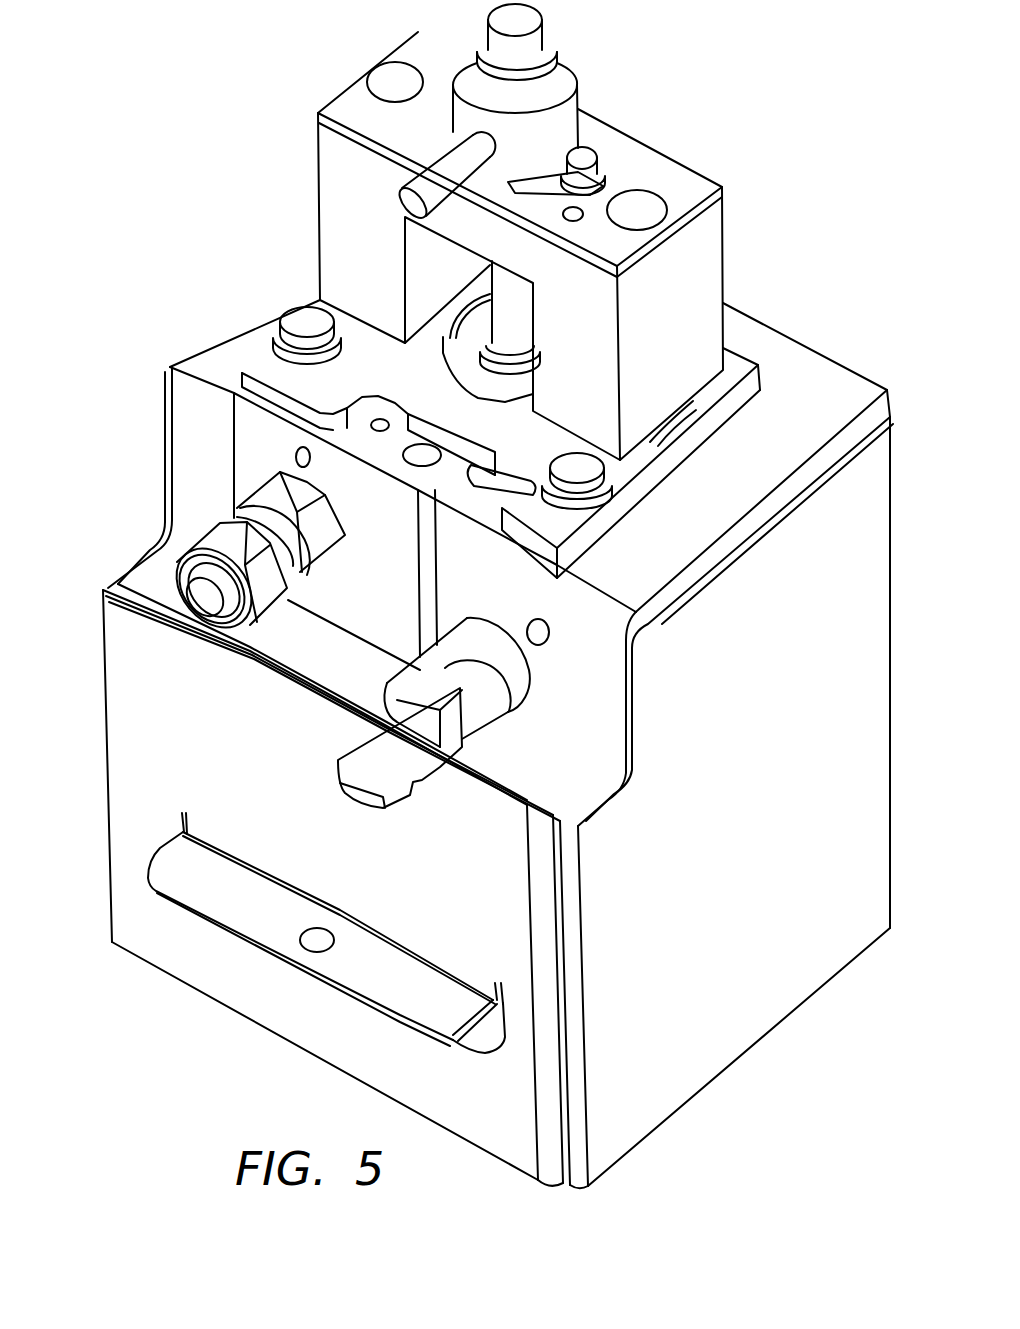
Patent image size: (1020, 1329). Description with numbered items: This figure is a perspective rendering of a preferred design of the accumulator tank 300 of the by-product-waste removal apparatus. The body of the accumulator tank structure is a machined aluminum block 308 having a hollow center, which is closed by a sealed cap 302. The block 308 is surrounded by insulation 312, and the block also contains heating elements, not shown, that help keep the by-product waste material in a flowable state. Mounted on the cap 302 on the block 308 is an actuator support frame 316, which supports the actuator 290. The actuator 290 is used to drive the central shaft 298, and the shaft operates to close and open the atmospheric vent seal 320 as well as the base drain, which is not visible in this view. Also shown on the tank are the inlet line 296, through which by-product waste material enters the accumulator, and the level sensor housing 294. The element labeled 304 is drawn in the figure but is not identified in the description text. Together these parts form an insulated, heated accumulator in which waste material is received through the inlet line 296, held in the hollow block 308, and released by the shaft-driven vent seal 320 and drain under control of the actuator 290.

The actuator 290 is at (467, 49).
The level sensor housing 294 is at (510, 710).
The inlet line 296 is at (240, 508).
The central shaft 298 is at (490, 298).
The accumulator tank 300 is at (768, 110).
The sealed cap 302 is at (545, 508).
The slot bracket 304 is at (190, 898).
The machined aluminum block 308 is at (340, 607).
The insulation 312 is at (843, 388).
The actuator support frame 316 is at (707, 260).
The atmospheric vent seal 320 is at (480, 353).